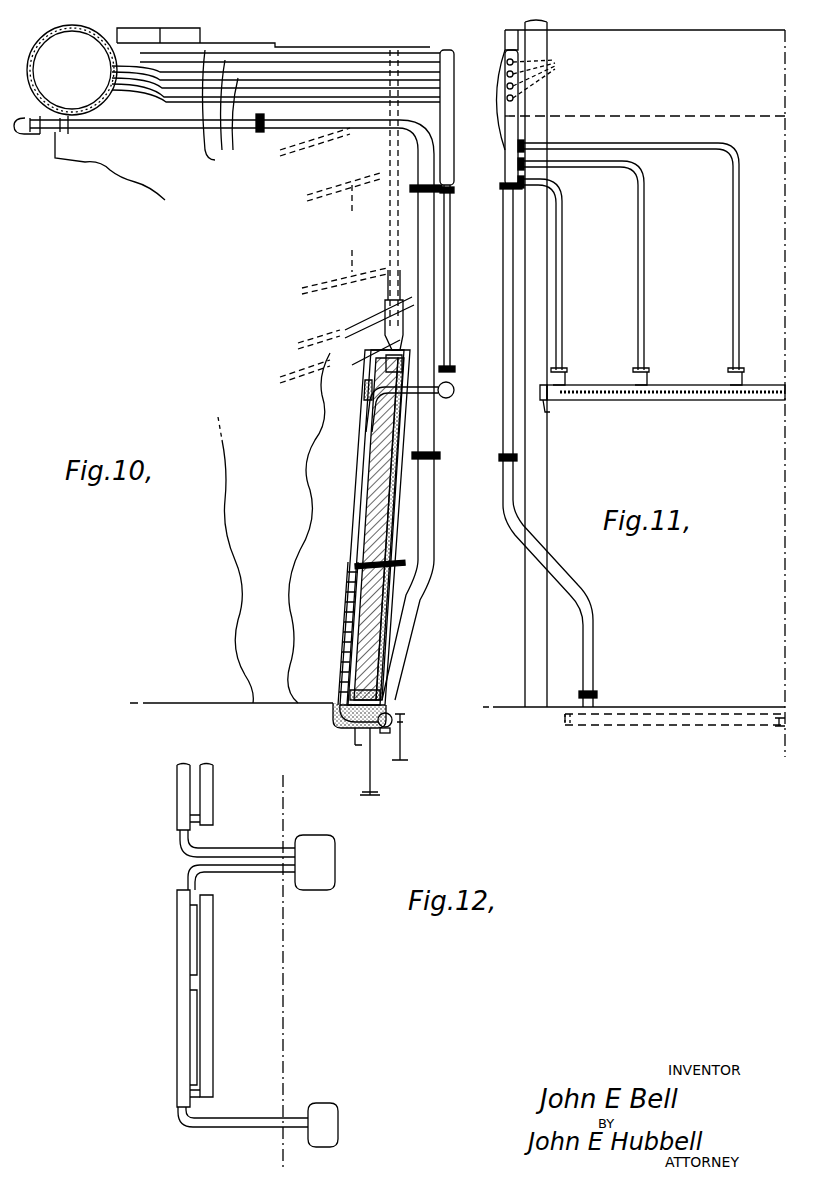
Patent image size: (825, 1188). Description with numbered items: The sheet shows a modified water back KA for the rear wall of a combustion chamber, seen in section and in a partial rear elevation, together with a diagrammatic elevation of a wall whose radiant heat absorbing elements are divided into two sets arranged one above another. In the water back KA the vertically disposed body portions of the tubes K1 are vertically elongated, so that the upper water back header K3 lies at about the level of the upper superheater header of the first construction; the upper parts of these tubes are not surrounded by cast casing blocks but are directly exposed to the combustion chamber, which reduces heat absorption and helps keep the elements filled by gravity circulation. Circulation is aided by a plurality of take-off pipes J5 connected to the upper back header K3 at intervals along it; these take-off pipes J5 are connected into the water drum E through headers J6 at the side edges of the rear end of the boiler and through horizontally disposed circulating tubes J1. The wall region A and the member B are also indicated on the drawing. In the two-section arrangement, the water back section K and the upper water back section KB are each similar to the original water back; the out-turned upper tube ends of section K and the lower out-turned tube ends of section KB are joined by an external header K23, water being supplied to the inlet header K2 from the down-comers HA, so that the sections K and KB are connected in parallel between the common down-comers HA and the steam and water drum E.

In FIG. 10, the water drum E is at (72, 70).
In FIG. 10, the circulating tubes J1 is at (221, 107).
In FIG. 11, the circulating tubes J1 is at (541, 73).
In FIG. 10, the headers J6 is at (455, 140).
In FIG. 11, the headers J6 is at (505, 165).
In FIG. 10, the take-off pipes J5 is at (452, 268).
In FIG. 11, the take-off pipes J5 is at (562, 290).
In FIG. 10, the frame member B is at (352, 228).
In FIG. 10, the upper water back header K3 is at (453, 384).
In FIG. 11, the upper water back header K3 is at (590, 402).
In FIG. 10, the down-comers HA is at (436, 432).
In FIG. 11, the down-comers HA is at (503, 497).
In FIG. 10, the tubes K1 is at (364, 488).
In FIG. 10, the wall A is at (308, 546).
In FIG. 10, the water back KA is at (345, 628).
In FIG. 10, the inlet header K2 is at (393, 722).
In FIG. 11, the inlet header K2 is at (633, 725).
In FIG. 12, the inlet header K2 is at (338, 1125).
In FIG. 12, the upper water back section KB is at (177, 803).
In FIG. 12, the external header K23 is at (316, 887).
In FIG. 12, the water back section K is at (177, 996).